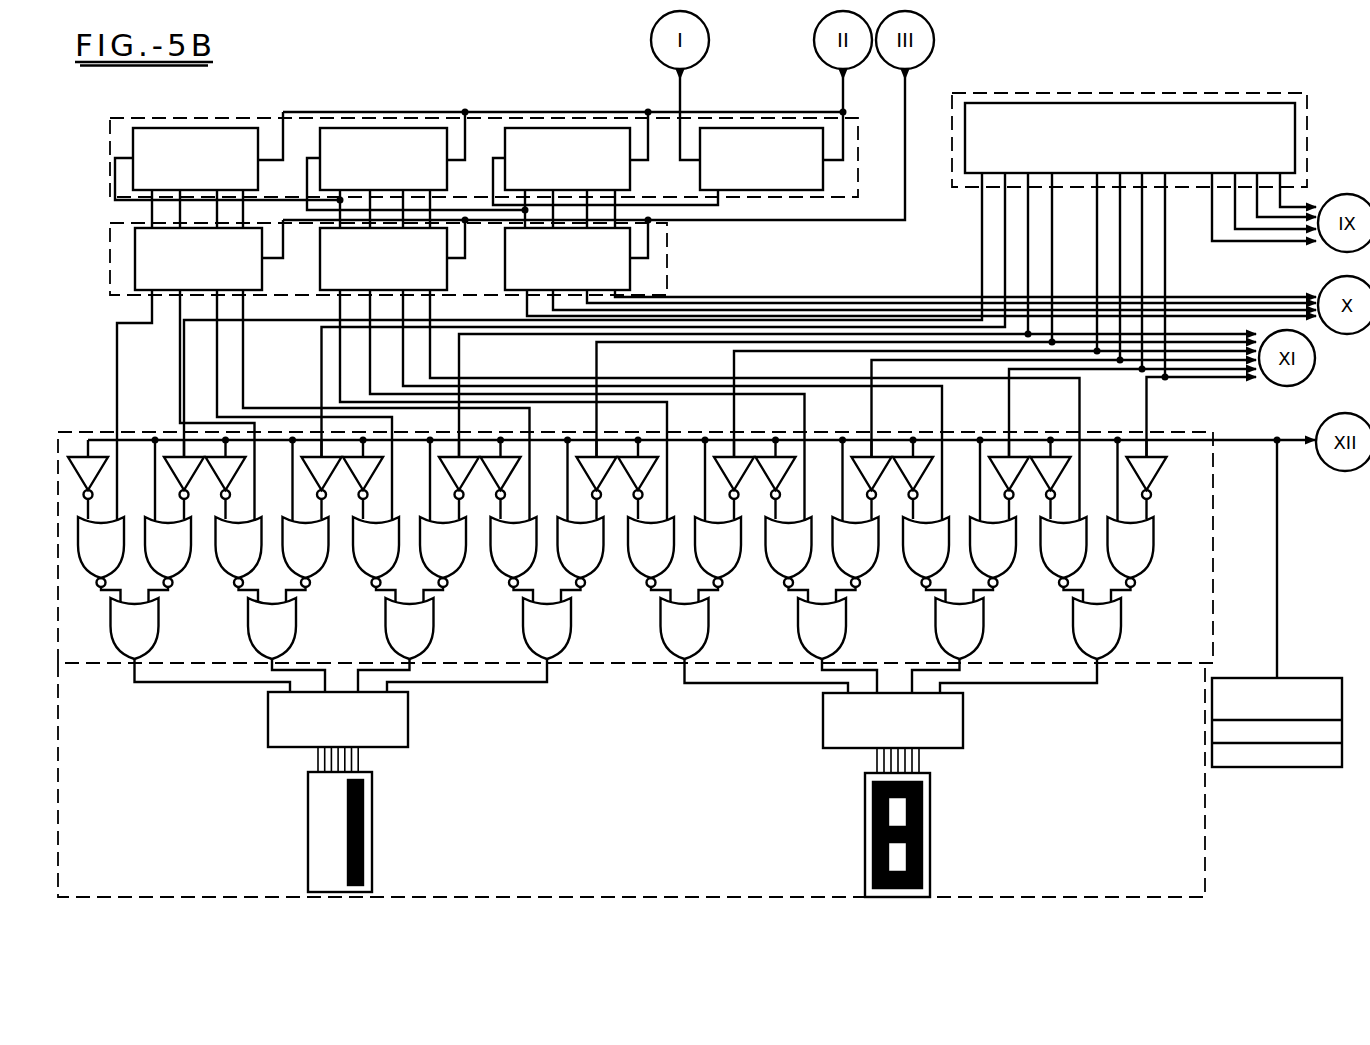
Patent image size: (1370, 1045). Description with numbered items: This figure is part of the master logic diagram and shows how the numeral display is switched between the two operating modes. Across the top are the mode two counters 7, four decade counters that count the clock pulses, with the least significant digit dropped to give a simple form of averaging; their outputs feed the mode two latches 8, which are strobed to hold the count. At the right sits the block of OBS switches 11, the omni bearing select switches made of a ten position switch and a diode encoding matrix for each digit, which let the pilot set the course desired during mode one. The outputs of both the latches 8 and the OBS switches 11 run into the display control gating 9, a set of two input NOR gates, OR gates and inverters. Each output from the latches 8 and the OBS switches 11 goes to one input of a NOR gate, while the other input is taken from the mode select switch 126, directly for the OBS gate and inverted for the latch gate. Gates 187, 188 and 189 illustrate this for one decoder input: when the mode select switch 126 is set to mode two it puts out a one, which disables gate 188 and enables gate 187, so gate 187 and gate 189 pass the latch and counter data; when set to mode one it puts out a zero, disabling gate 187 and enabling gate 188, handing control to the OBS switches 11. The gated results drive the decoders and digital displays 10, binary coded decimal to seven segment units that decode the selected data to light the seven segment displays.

The mode 2 counters 7 is at (101, 139).
The mode 2 latches 8 is at (101, 261).
The display control gating 9 is at (92, 430).
The decoders and digital displays 10 is at (1206, 836).
The OBS switches 11 is at (1078, 92).
The mode select switch 126 is at (1284, 768).
The NOR gate 187 is at (101, 552).
The NOR gate 188 is at (168, 552).
The OR gate 189 is at (135, 628).